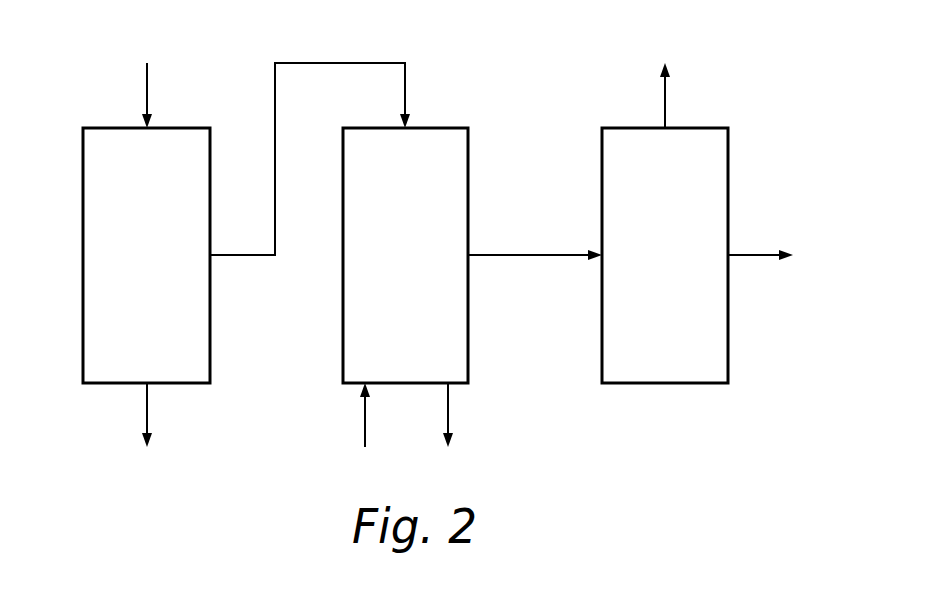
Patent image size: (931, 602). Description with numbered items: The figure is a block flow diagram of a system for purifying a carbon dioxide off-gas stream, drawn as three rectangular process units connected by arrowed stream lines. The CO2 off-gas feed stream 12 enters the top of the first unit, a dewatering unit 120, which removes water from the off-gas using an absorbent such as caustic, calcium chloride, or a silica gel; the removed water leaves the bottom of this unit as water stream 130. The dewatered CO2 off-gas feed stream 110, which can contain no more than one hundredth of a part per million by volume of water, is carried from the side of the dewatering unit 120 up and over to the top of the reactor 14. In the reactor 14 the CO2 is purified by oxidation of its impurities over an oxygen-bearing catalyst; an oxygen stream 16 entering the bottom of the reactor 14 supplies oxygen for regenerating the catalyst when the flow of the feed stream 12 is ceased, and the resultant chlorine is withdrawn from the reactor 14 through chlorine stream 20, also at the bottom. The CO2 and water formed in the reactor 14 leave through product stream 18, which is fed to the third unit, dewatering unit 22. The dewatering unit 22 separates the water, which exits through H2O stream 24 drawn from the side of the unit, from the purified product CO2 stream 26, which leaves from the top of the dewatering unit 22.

The CO2 off-gas feed stream 12 is at (145, 88).
The dewatered CO2 off-gas feed stream 110 is at (320, 62).
The dewatering unit 120 is at (210, 342).
The water stream 130 is at (145, 417).
The reactor 14 is at (469, 325).
The oxygen stream 16 is at (362, 422).
The product stream 18 is at (552, 252).
The chlorine stream 20 is at (450, 410).
The dewatering unit 22 is at (728, 330).
The H2O stream 24 is at (755, 253).
The product CO2 stream 26 is at (666, 95).